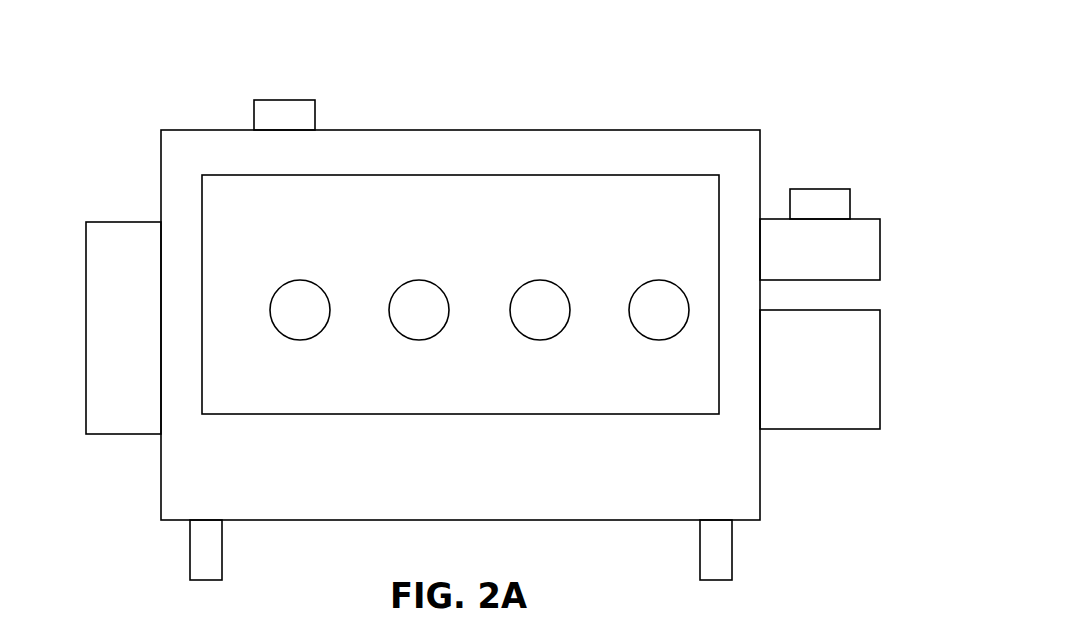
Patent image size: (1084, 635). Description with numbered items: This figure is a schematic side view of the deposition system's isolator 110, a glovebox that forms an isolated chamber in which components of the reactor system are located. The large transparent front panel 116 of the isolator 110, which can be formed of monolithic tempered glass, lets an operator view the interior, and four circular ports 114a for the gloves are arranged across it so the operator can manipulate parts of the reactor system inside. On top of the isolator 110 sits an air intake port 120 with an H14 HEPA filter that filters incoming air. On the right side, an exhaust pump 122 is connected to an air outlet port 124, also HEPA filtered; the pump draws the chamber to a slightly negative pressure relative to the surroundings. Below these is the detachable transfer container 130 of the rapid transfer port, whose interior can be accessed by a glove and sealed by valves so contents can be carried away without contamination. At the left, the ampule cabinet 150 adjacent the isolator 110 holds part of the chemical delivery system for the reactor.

The isolator 110 is at (760, 472).
The ports for the gloves 114a is at (300, 293).
The front panel 116 is at (200, 220).
The air intake port 120 is at (280, 113).
The exhaust pump 122 is at (850, 248).
The air outlet port 124 is at (820, 203).
The transfer container 130 is at (862, 382).
The ampule cabinet 150 is at (117, 413).